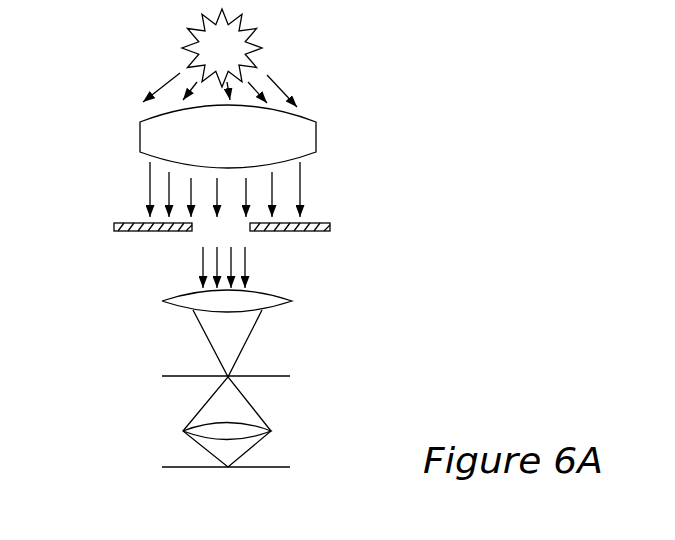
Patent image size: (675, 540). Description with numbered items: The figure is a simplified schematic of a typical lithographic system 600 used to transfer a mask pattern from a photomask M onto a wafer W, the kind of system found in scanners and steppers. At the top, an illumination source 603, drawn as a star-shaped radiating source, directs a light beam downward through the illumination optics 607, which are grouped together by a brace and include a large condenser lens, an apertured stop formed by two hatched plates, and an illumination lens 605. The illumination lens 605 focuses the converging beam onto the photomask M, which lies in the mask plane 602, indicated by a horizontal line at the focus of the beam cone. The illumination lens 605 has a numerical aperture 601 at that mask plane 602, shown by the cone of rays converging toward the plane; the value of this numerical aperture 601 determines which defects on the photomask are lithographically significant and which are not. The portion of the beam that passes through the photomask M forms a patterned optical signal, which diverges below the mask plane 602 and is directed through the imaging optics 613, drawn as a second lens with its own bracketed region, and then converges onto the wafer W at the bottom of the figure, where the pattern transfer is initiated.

The lithographic system 600 is at (340, 45).
The illumination source 603 is at (186, 48).
The illumination optics 607 is at (91, 115).
The illumination lens 605 is at (292, 300).
The numerical aperture 601 is at (250, 334).
The photomask M is at (272, 376).
The mask plane 602 is at (150, 376).
The imaging optics 613 is at (128, 378).
The wafer W is at (185, 467).